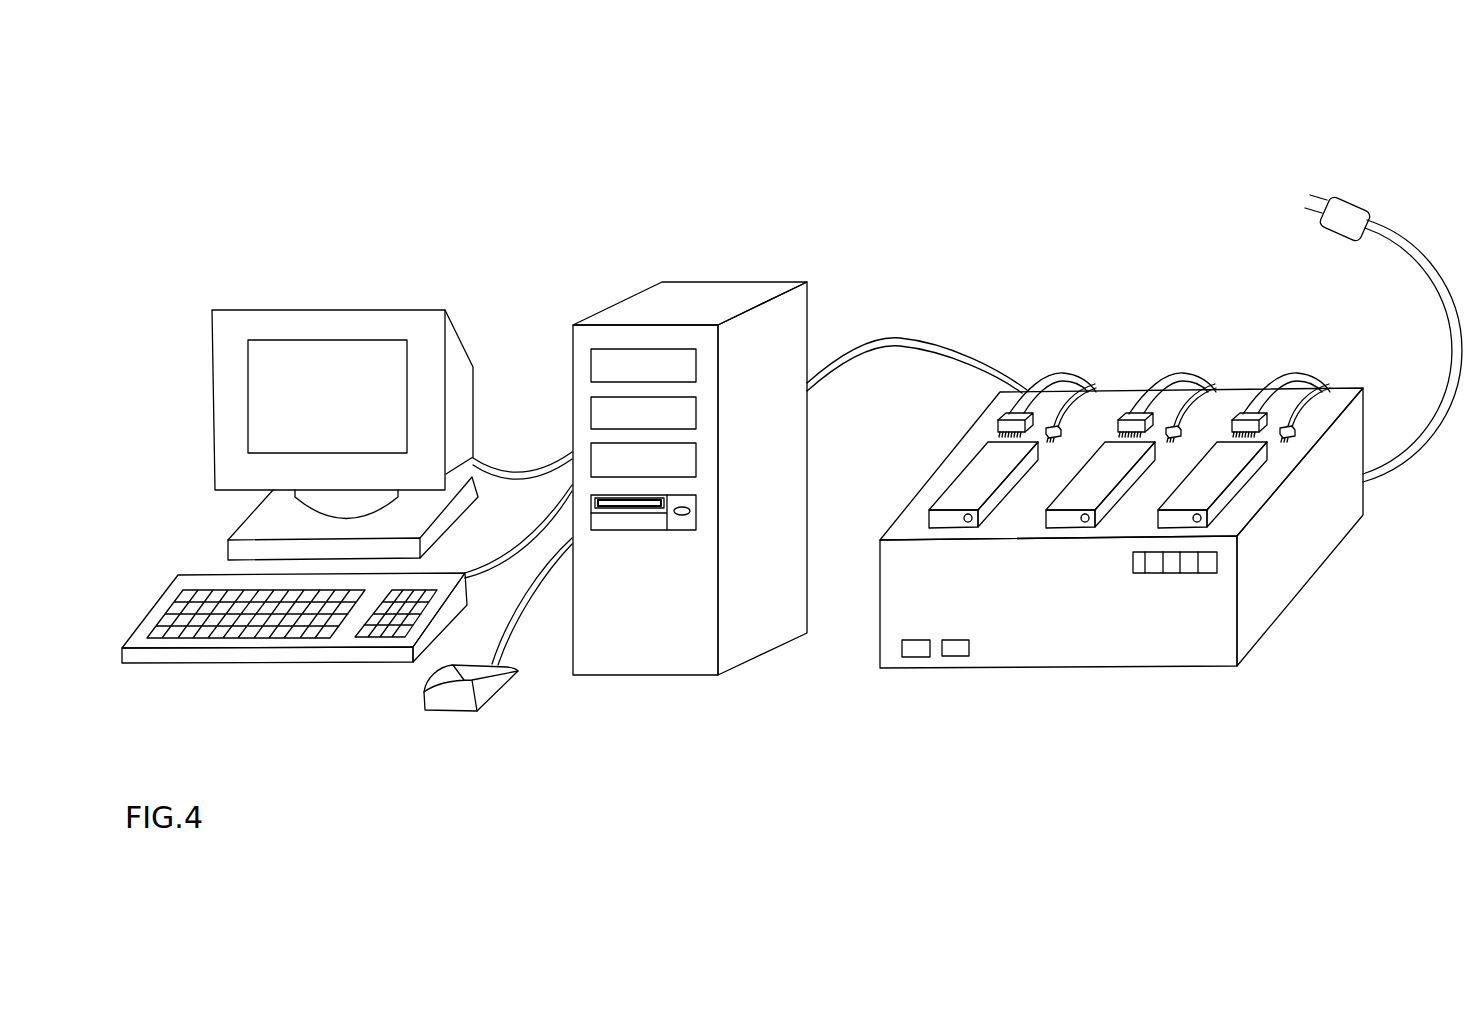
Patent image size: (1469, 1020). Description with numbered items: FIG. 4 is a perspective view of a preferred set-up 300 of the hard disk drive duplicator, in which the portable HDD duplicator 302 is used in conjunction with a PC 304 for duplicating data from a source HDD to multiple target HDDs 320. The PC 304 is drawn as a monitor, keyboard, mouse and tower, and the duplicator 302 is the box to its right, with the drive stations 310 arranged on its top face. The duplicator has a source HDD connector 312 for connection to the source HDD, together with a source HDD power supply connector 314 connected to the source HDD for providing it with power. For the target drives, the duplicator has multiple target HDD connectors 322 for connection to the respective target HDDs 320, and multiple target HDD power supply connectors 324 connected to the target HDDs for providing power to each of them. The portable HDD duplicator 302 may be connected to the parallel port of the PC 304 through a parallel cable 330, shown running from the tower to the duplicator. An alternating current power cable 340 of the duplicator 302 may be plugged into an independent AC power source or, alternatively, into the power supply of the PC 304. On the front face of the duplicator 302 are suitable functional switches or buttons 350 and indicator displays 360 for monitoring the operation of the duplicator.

The set-up 300 is at (842, 730).
The HDD duplicator 302 is at (1022, 650).
The PC 304 is at (520, 213).
The test tray 310 is at (985, 468).
The source HDD connector 312 is at (1035, 383).
The source HDD power supply connector 314 is at (1055, 380).
The target HDDs 320 is at (1120, 460).
The target HDD connectors 322 is at (1150, 398).
The target HDD power supply connectors 324 is at (1168, 387).
The parallel cable 330 is at (897, 338).
The AC power cable 340 is at (1392, 237).
The functional switches or buttons 350 is at (913, 653).
The indicator displays 360 is at (1155, 562).